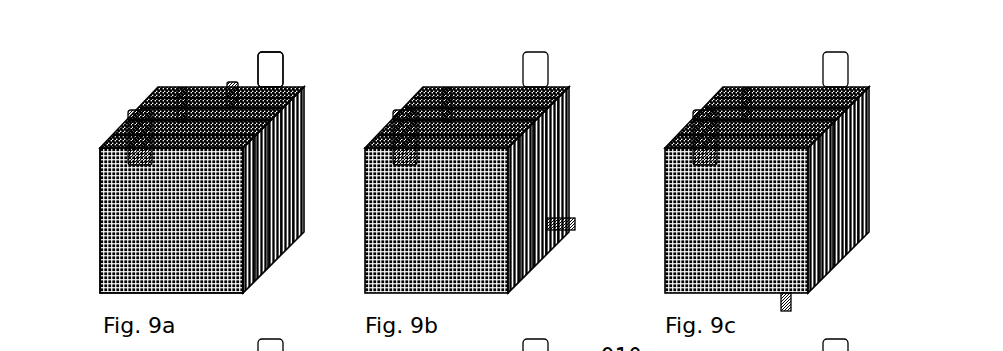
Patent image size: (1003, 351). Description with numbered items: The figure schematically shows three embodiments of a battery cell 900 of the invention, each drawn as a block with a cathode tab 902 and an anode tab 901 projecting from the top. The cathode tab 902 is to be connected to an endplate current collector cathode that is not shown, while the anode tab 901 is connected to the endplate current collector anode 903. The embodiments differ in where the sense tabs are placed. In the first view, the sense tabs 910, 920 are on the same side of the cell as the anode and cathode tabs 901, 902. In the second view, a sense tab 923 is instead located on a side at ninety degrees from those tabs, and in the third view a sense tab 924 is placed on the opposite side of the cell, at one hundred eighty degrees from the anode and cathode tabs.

In FIG. 9A, the battery cell assembly 900 is at (142, 53).
In FIG. 9A, the anode tab 901 is at (133, 132).
In FIG. 9A, the cathode tab 902 is at (287, 64).
In FIG. 9A, the endplate current collector anode 903 is at (147, 238).
In FIG. 9A, the sense tab 910 is at (178, 86).
In FIG. 9B, the sense tab 910 is at (448, 88).
In FIG. 9C, the sense tab 910 is at (746, 88).
In FIG. 9A, the sense tab 920 is at (232, 82).
In FIG. 9B, the sense tab 923 is at (575, 222).
In FIG. 9C, the sense tab 924 is at (791, 305).